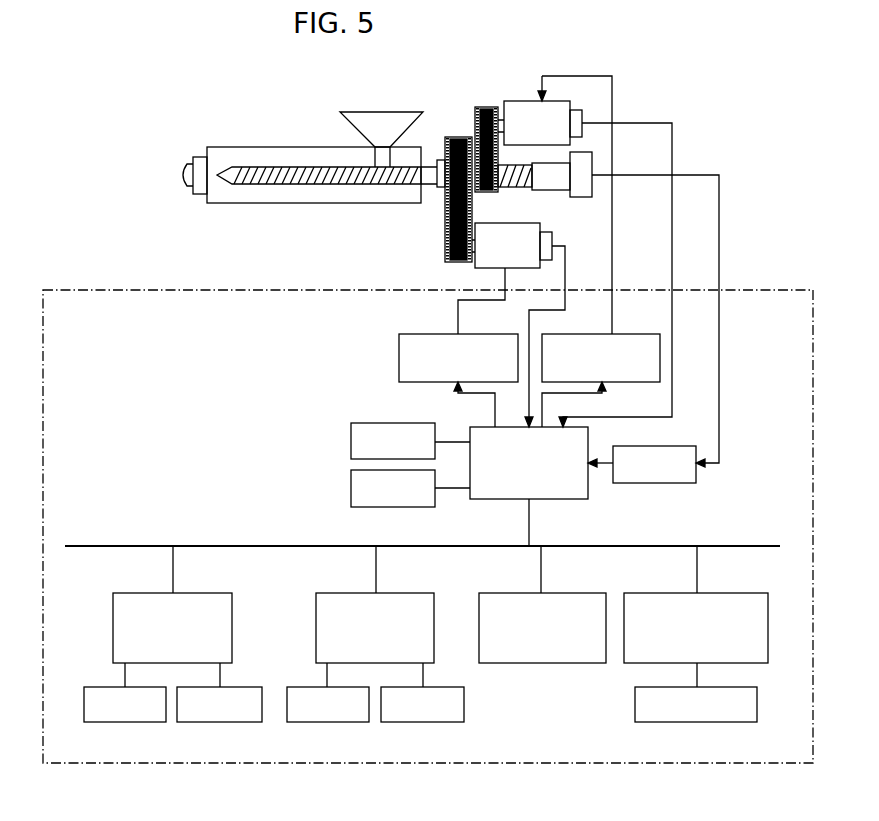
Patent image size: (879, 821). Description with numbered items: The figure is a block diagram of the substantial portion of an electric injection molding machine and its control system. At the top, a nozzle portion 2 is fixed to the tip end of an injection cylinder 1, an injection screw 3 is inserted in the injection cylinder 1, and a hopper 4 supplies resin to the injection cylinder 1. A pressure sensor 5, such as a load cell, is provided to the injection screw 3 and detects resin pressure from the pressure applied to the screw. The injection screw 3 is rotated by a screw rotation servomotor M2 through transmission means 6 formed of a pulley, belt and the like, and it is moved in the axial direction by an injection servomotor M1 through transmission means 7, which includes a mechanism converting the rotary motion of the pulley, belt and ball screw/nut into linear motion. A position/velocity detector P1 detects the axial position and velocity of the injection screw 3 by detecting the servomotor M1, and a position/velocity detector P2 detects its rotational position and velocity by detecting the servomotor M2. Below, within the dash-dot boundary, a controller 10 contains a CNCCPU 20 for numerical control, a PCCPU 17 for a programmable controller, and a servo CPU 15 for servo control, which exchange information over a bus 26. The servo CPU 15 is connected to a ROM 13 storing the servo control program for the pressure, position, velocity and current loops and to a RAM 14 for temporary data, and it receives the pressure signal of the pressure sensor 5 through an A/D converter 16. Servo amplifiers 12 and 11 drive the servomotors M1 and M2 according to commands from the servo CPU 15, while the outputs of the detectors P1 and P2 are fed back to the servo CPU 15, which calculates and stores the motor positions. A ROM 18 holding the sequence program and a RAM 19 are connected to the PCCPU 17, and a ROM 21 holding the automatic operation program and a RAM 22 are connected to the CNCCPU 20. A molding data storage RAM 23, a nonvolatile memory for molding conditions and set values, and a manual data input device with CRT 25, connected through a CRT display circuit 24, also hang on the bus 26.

The injection cylinder 1 is at (243, 148).
The nozzle portion 2 is at (190, 173).
The injection screw 3 is at (278, 185).
The hopper 4 is at (368, 114).
The pressure sensor 5 is at (572, 198).
The transmission means 6 is at (430, 232).
The transmission means 7 is at (486, 96).
The injection servomotor M1 is at (526, 100).
The screw rotation servomotor M2 is at (488, 223).
The position/velocity detector P1 is at (585, 110).
The position/velocity detector P2 is at (552, 246).
The controller 10 is at (740, 290).
The servo amplifier 11 is at (418, 334).
The servo amplifier 12 is at (632, 334).
The ROM 13 is at (351, 438).
The RAM 14 is at (351, 492).
The servo CPU 15 is at (557, 500).
The A/D converter 16 is at (665, 483).
The PCCPU 17 is at (152, 593).
The ROM 18 is at (118, 722).
The RAM 19 is at (200, 722).
The CNCCPU 20 is at (360, 593).
The ROM 21 is at (330, 722).
The RAM 22 is at (393, 722).
The molding data storage RAM 23 is at (524, 593).
The CRT display circuit 24 is at (680, 593).
The manual data input device with CRT 25 is at (698, 722).
The bus 26 is at (713, 546).